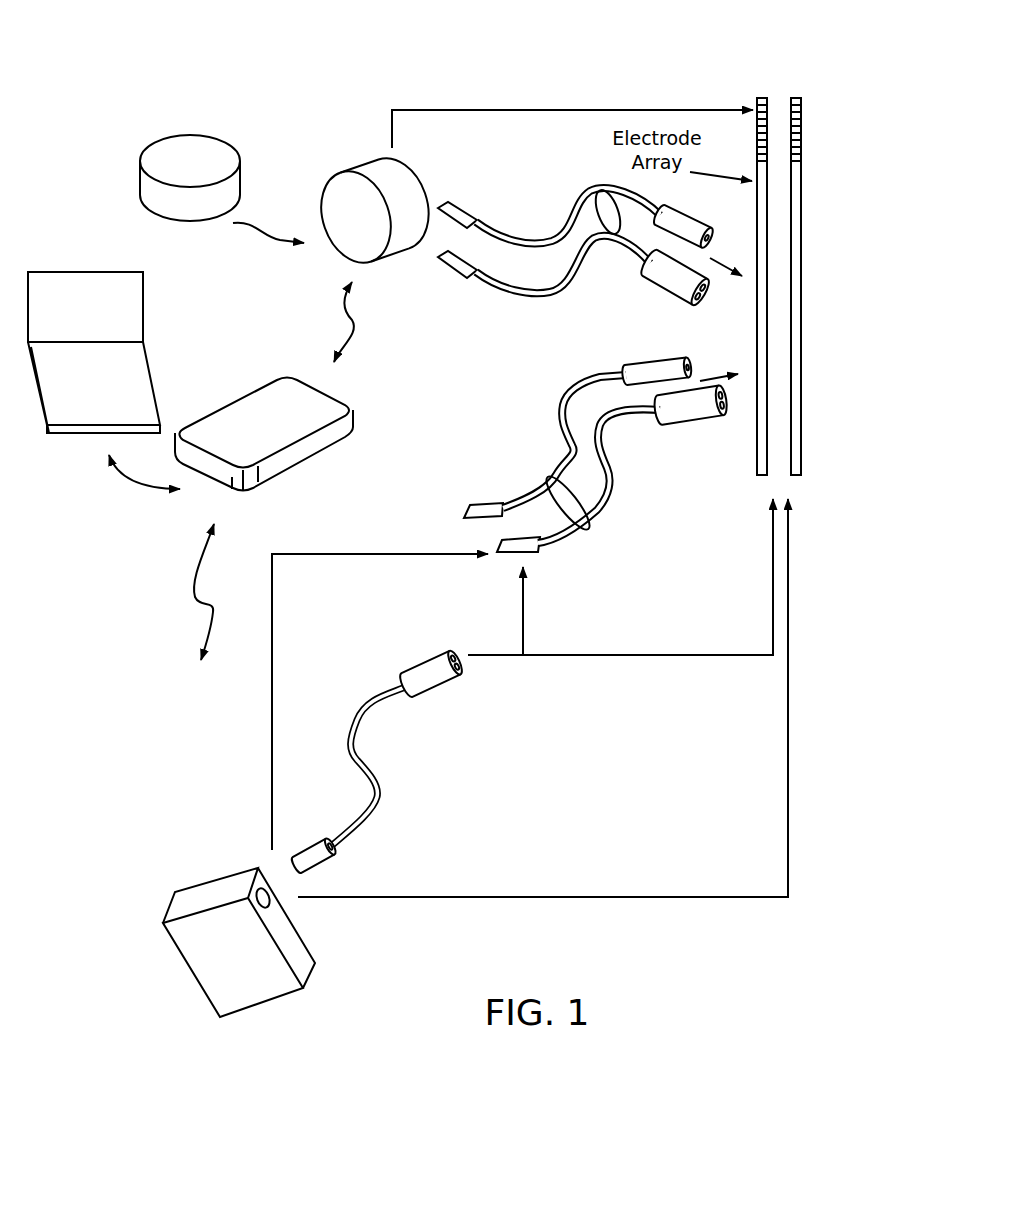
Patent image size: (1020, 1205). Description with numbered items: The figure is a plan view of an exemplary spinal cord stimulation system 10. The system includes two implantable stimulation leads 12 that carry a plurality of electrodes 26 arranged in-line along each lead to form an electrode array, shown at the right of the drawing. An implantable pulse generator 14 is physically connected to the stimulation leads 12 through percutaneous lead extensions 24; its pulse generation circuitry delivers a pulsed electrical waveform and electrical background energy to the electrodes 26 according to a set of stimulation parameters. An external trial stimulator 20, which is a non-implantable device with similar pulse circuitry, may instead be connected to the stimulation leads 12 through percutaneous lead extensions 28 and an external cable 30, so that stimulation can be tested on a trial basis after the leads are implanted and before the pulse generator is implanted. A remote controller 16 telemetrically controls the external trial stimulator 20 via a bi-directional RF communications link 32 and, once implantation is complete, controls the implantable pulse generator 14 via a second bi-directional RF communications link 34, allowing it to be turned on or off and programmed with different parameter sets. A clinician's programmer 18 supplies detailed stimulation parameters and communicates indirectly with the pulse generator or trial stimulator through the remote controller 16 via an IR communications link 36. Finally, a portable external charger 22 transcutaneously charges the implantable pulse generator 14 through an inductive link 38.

The spinal cord stimulation system 10 is at (549, 58).
The implantable stimulation leads 12 is at (811, 258).
The implantable pulse generator 14 is at (353, 164).
The remote controller 16 is at (275, 393).
The clinician's programmer 18 is at (72, 288).
The external trial stimulator 20 is at (212, 895).
The external charger 22 is at (192, 143).
The percutaneous lead extensions 24 is at (600, 184).
The electrodes 26 is at (802, 165).
The percutaneous lead extensions 28 is at (547, 483).
The external cable 30 is at (373, 700).
The bi-directional RF communications link 32 is at (205, 633).
The bi-directional RF communications link 34 is at (351, 333).
The IR communications link 36 is at (133, 483).
The inductive link 38 is at (247, 227).